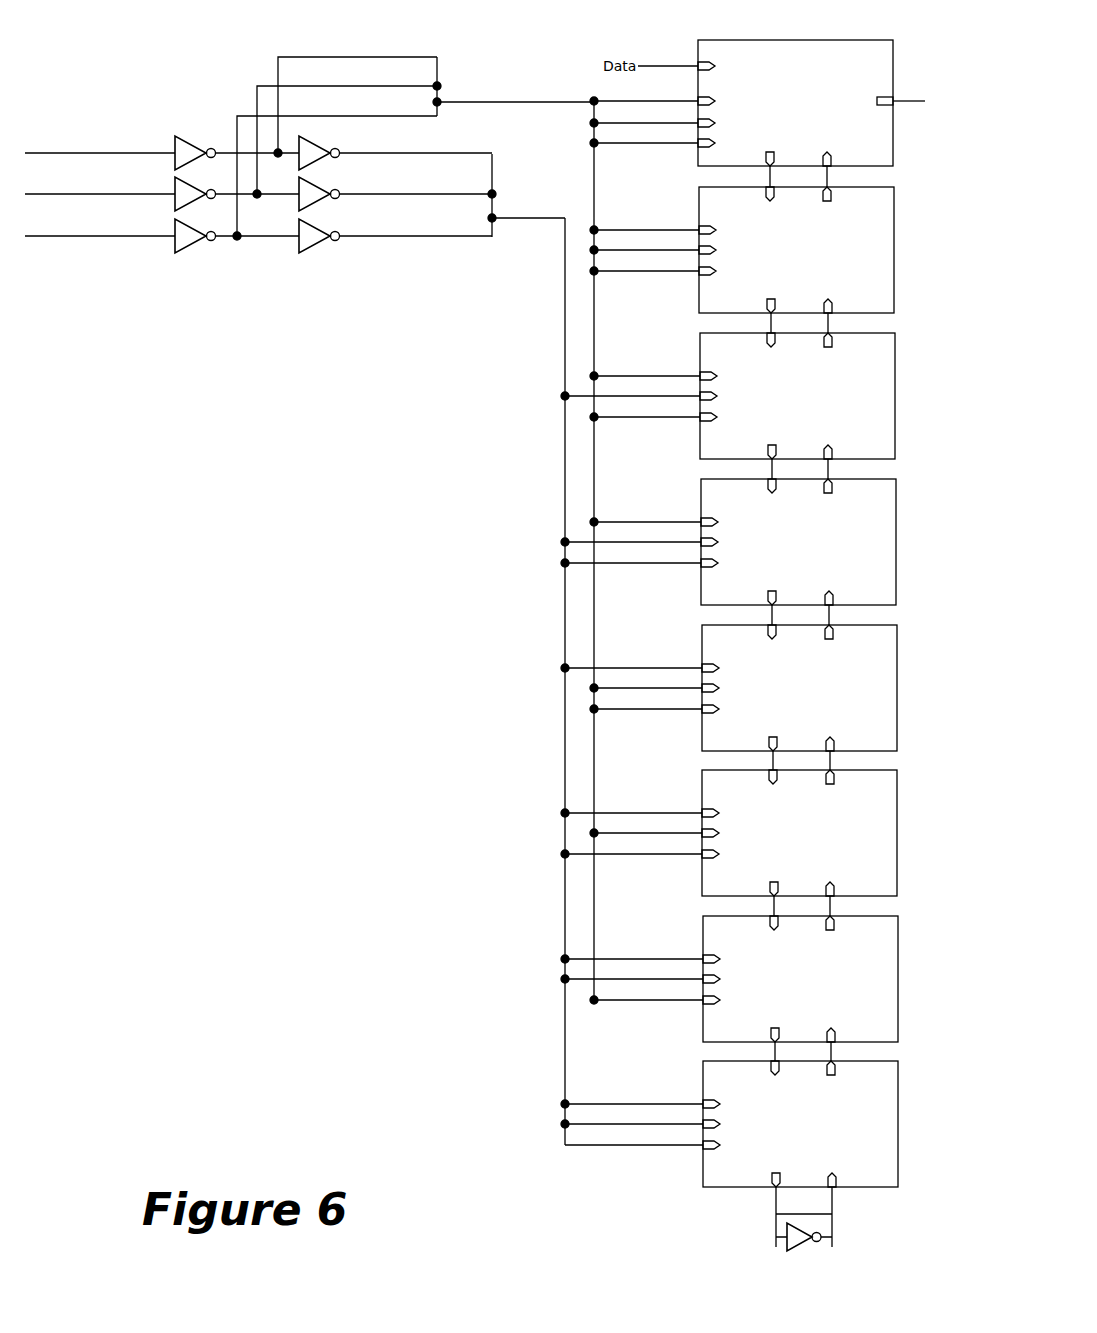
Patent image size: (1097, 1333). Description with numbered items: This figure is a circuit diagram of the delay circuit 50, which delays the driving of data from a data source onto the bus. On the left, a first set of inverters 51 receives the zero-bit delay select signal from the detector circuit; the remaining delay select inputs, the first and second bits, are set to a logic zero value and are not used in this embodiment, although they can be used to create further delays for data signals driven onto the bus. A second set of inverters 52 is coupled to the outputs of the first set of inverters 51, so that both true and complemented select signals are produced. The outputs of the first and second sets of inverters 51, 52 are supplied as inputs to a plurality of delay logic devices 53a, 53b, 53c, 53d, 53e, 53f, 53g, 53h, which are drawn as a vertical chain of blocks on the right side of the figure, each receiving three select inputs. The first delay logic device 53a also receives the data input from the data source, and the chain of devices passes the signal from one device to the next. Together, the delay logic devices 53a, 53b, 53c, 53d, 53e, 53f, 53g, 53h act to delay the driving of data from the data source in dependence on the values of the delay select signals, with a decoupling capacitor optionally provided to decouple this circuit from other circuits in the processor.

The delay circuit 50 is at (201, 57).
The first set of inverters 51 is at (196, 264).
The second set of inverters 52 is at (323, 264).
The first delay logic device 53a is at (698, 155).
The delay logic device 53b is at (699, 293).
The delay logic device 53c is at (700, 439).
The delay logic device 53d is at (701, 585).
The delay logic device 53e is at (702, 731).
The delay logic device 53f is at (702, 876).
The delay logic device 53g is at (703, 1022).
The delay logic device 53h is at (703, 1167).